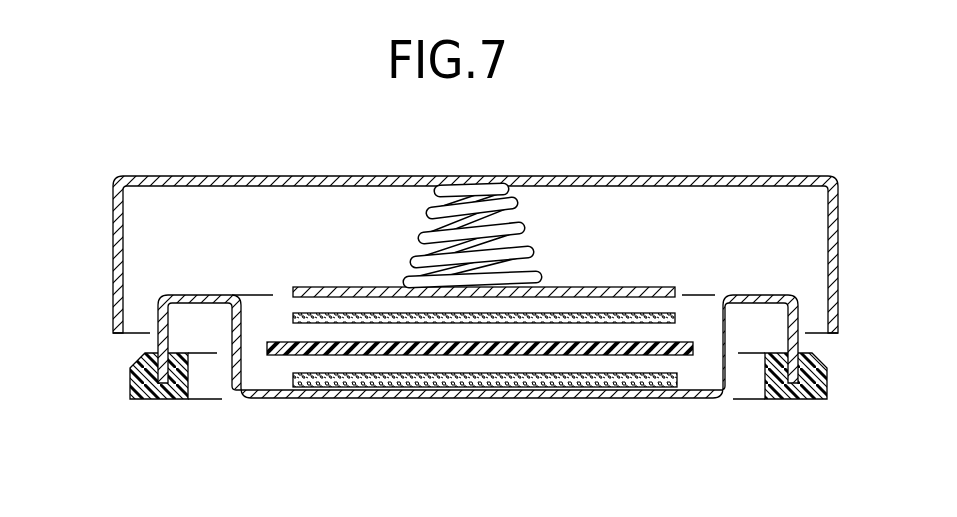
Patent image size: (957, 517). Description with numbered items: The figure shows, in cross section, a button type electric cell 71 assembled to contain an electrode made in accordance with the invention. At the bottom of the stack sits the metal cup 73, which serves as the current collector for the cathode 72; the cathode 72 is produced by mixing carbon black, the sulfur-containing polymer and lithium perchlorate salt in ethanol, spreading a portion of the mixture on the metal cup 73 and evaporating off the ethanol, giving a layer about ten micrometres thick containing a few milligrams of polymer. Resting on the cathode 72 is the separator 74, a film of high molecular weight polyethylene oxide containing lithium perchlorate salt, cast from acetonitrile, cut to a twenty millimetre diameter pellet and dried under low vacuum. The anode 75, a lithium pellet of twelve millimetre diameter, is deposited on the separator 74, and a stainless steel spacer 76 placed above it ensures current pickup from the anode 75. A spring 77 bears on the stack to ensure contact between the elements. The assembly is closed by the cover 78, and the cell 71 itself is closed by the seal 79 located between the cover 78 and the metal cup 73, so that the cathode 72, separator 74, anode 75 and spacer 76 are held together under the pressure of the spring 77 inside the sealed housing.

The button type electric cell 71 is at (772, 158).
The cathode 72 is at (605, 388).
The metal cup 73 is at (707, 400).
The separator 74 is at (280, 356).
The anode 75 is at (675, 316).
The stainless steel spacer 76 is at (327, 286).
The spring 77 is at (526, 253).
The cover 78 is at (113, 232).
The seal 79 is at (145, 399).